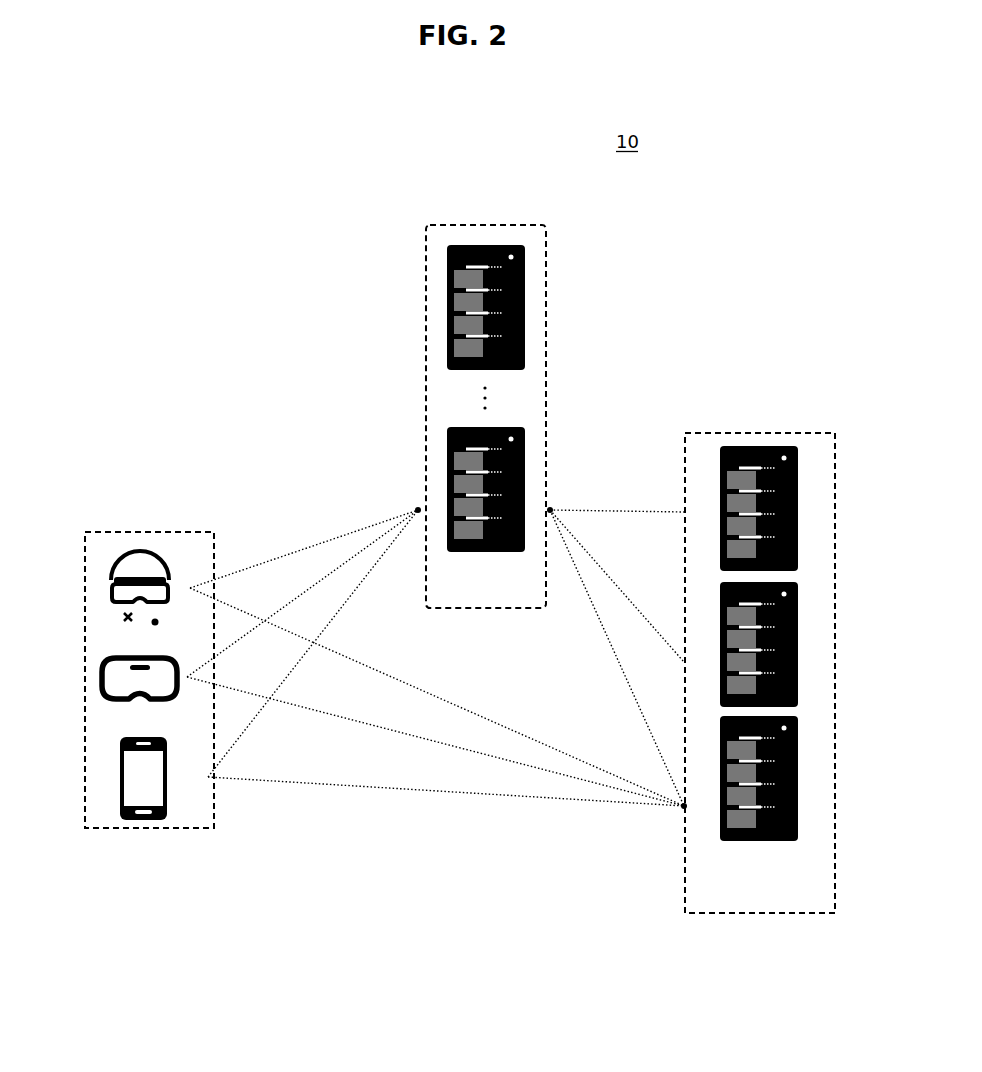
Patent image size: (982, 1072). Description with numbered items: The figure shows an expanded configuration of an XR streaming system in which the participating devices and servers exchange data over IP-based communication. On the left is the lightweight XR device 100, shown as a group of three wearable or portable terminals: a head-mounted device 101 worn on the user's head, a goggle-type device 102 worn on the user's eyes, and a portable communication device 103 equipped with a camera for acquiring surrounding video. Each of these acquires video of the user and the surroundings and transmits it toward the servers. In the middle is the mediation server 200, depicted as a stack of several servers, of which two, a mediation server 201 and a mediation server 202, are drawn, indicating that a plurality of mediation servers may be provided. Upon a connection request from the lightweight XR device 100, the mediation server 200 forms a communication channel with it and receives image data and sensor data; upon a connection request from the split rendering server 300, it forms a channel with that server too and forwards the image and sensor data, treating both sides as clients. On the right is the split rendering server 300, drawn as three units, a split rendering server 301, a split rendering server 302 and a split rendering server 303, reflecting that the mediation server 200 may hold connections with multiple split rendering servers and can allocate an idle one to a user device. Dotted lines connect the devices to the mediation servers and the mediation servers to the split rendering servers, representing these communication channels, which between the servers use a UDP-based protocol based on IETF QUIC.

The lightweight XR device 100 is at (156, 530).
The head-mounted device 101 is at (108, 591).
The goggle-type device 102 is at (100, 697).
The portable communication device 103 is at (115, 780).
The mediation server 200 is at (494, 223).
The mediation server 201 is at (443, 305).
The mediation server 202 is at (443, 472).
The split rendering server 300 is at (774, 431).
The split rendering server 301 is at (804, 527).
The split rendering server 302 is at (804, 658).
The split rendering server 303 is at (804, 809).